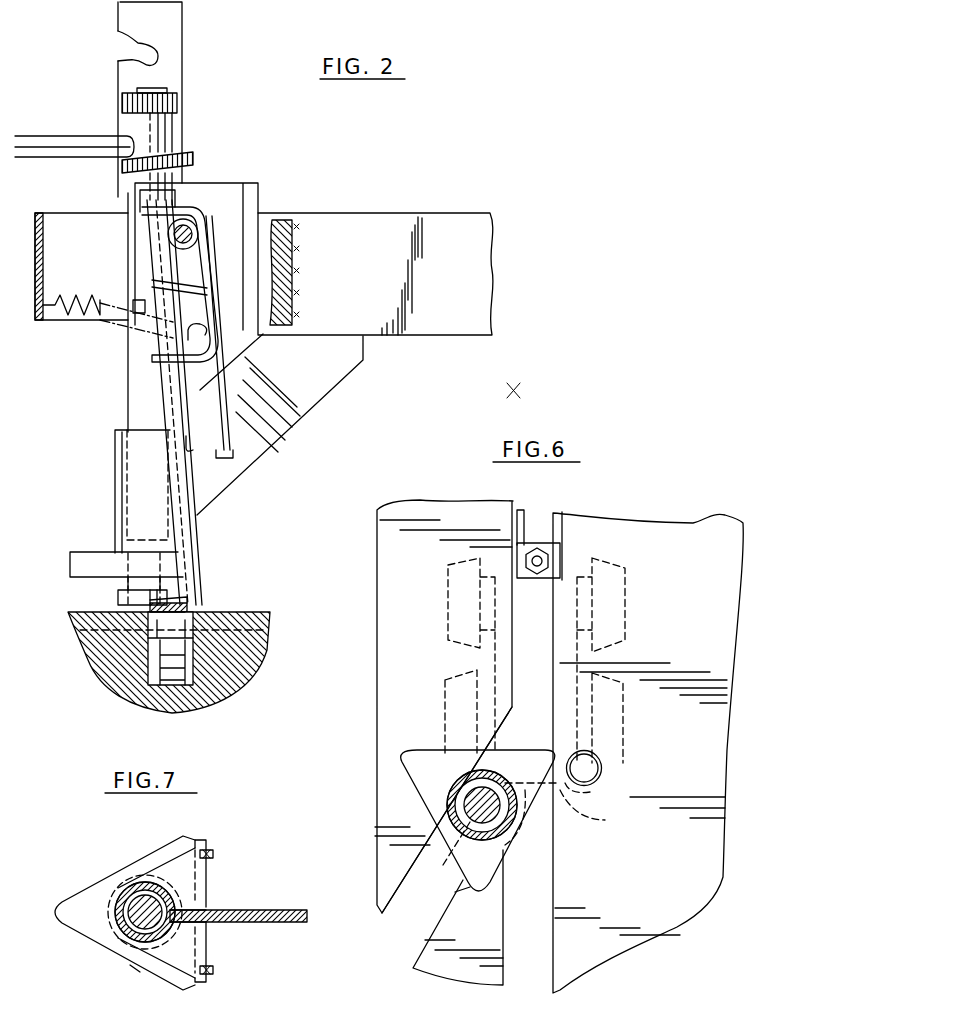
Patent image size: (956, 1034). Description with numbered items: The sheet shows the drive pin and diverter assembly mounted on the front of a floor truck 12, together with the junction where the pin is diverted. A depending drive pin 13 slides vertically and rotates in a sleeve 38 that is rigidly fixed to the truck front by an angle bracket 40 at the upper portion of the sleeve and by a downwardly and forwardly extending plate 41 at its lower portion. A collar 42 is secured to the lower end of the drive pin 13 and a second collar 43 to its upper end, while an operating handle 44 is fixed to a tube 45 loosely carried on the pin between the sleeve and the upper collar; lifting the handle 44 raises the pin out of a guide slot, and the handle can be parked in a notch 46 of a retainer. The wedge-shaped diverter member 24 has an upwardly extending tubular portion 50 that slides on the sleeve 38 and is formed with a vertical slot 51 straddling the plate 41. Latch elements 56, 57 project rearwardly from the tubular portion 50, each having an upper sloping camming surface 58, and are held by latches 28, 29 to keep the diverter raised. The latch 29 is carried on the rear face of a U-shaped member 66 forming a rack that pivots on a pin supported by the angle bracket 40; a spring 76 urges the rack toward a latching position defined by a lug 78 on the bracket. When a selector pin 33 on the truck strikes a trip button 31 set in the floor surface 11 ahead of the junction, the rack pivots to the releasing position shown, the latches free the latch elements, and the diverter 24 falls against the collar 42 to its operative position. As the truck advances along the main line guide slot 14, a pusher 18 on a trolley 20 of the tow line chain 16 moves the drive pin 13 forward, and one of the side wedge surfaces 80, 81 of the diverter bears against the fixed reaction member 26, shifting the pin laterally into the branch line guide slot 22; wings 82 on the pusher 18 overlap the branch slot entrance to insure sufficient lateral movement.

In FIG. 6, the surface 11 is at (648, 753).
In FIG. 2, the floor truck 12 is at (437, 213).
In FIG. 2, the drive pin 13 is at (137, 584).
In FIG. 6, the drive pin 13 is at (500, 806).
In FIG. 7, the drive pin 13 is at (135, 925).
In FIG. 2, the main line guide slot 14 is at (233, 665).
In FIG. 6, the main line guide slot 14 is at (537, 898).
In FIG. 6, the chain 16 is at (526, 518).
In FIG. 6, the pusher 18 is at (596, 811).
In FIG. 6, the trolley 20 is at (632, 609).
In FIG. 6, the branch line guide slot 22 is at (432, 922).
In FIG. 2, the diverter member 24 is at (78, 552).
In FIG. 6, the diverter member 24 is at (516, 838).
In FIG. 7, the diverter member 24 is at (133, 968).
In FIG. 6, the reaction member 26 is at (603, 770).
In FIG. 7, the latch 28 is at (214, 855).
In FIG. 2, the latch 29 is at (229, 424).
In FIG. 7, the latch 29 is at (214, 970).
In FIG. 2, the trip button 31 is at (187, 614).
In FIG. 2, the selector pin 33 is at (197, 543).
In FIG. 2, the sleeve 38 is at (126, 388).
In FIG. 7, the sleeve 38 is at (125, 895).
In FIG. 2, the angle bracket 40 is at (226, 183).
In FIG. 2, the plate 41 is at (183, 38).
In FIG. 7, the plate 41 is at (274, 911).
In FIG. 2, the collar 42 is at (120, 599).
In FIG. 2, the second collar 43 is at (180, 105).
In FIG. 2, the operating handle 44 is at (50, 137).
In FIG. 2, the tube 45 is at (163, 142).
In FIG. 2, the notch 46 is at (128, 42).
In FIG. 2, the tubular portion 50 is at (115, 478).
In FIG. 6, the tubular portion 50 is at (448, 805).
In FIG. 7, the tubular portion 50 is at (111, 913).
In FIG. 7, the vertical slot 51 is at (204, 898).
In FIG. 7, the latch element 56 is at (208, 877).
In FIG. 7, the latch element 57 is at (208, 952).
In FIG. 2, the upper sloping camming surface 58 is at (190, 441).
In FIG. 2, the U-shaped member 66 is at (198, 234).
In FIG. 2, the spring 76 is at (90, 322).
In FIG. 2, the lug 78 is at (133, 300).
In FIG. 6, the side wedge surface 80 is at (425, 838).
In FIG. 7, the side wedge surface 80 is at (137, 862).
In FIG. 6, the side wedge surface 81 is at (508, 860).
In FIG. 7, the side wedge surface 81 is at (153, 980).
In FIG. 6, the wings 82 is at (596, 792).